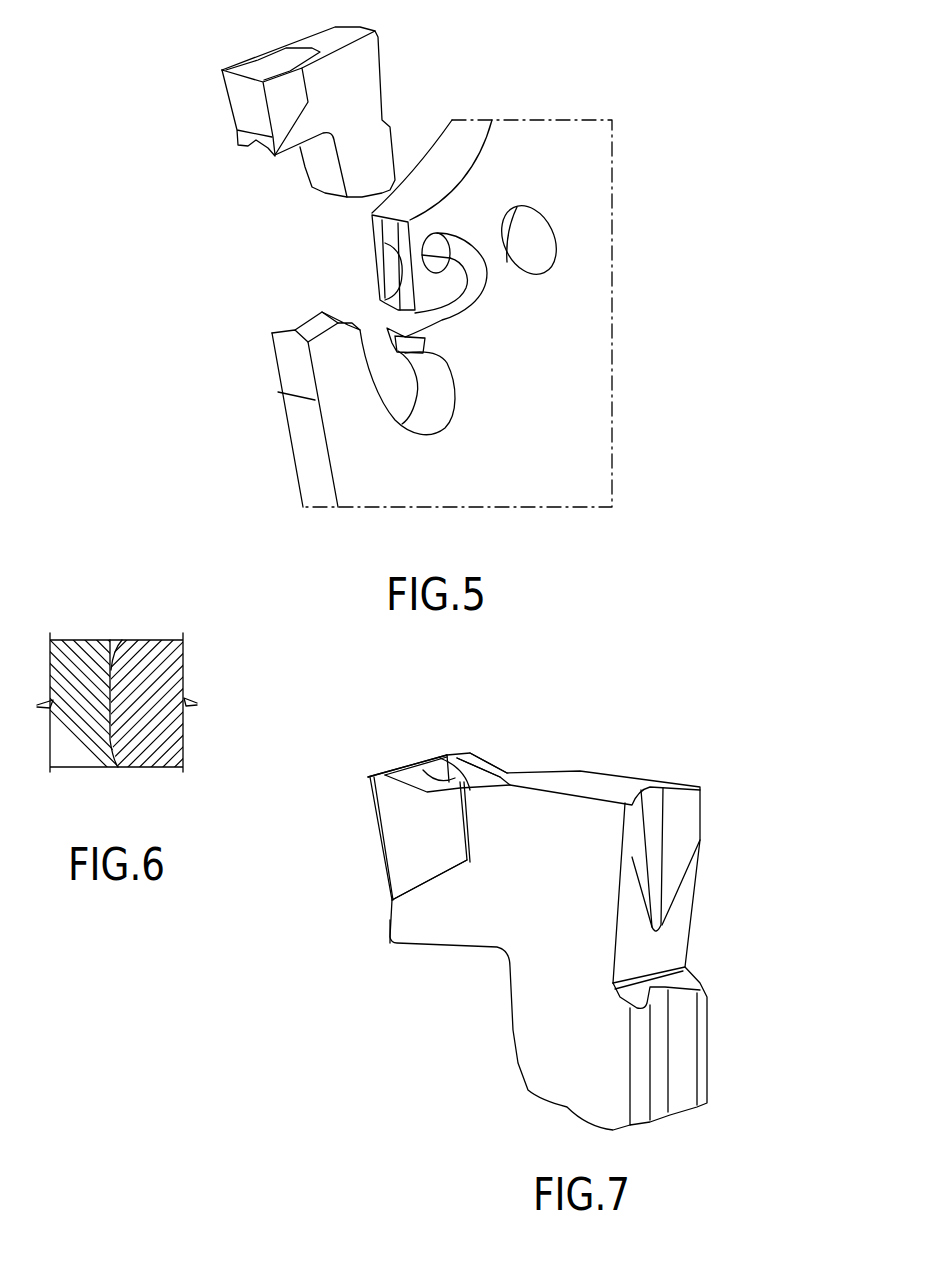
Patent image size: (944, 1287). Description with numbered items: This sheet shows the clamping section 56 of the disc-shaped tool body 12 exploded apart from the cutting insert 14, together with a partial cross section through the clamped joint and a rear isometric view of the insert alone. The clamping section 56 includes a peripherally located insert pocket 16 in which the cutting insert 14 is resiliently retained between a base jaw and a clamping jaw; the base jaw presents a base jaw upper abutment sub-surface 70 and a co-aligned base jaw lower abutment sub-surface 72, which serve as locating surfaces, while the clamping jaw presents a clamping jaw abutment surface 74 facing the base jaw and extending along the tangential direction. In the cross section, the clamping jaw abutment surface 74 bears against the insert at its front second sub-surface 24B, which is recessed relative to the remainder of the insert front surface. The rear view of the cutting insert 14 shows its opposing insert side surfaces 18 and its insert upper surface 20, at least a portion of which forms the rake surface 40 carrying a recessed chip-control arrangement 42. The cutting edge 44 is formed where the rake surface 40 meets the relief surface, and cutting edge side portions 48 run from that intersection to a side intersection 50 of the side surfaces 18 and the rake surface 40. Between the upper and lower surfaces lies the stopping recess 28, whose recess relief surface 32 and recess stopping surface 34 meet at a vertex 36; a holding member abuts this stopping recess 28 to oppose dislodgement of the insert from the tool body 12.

In FIG. 5, the tool body 12 is at (580, 143).
In FIG. 7, the cutting insert 14 is at (696, 764).
In FIG. 5, the insert pocket 16 is at (400, 388).
In FIG. 7, the insert side surface 18 is at (547, 1050).
In FIG. 7, the insert upper surface 20 is at (616, 772).
In FIG. 6, the front second sub-surface 24B is at (113, 770).
In FIG. 7, the stopping recess 28 is at (688, 931).
In FIG. 7, the recess relief surface 32 is at (693, 875).
In FIG. 7, the recess stopping surface 34 is at (697, 980).
In FIG. 7, the vertex 36 is at (680, 957).
In FIG. 7, the rake surface 40 is at (463, 780).
In FIG. 7, the chip-control arrangement 42 is at (448, 752).
In FIG. 7, the cutting edge 44 is at (410, 767).
In FIG. 7, the cutting edge side portion 48 is at (490, 760).
In FIG. 7, the side intersection 50 is at (424, 800).
In FIG. 5, the clamping section 56 is at (288, 271).
In FIG. 5, the base jaw upper abutment sub-surface 70 is at (398, 232).
In FIG. 5, the base jaw lower abutment sub-surface 72 is at (420, 345).
In FIG. 6, the clamping jaw abutment surface 74 is at (122, 640).